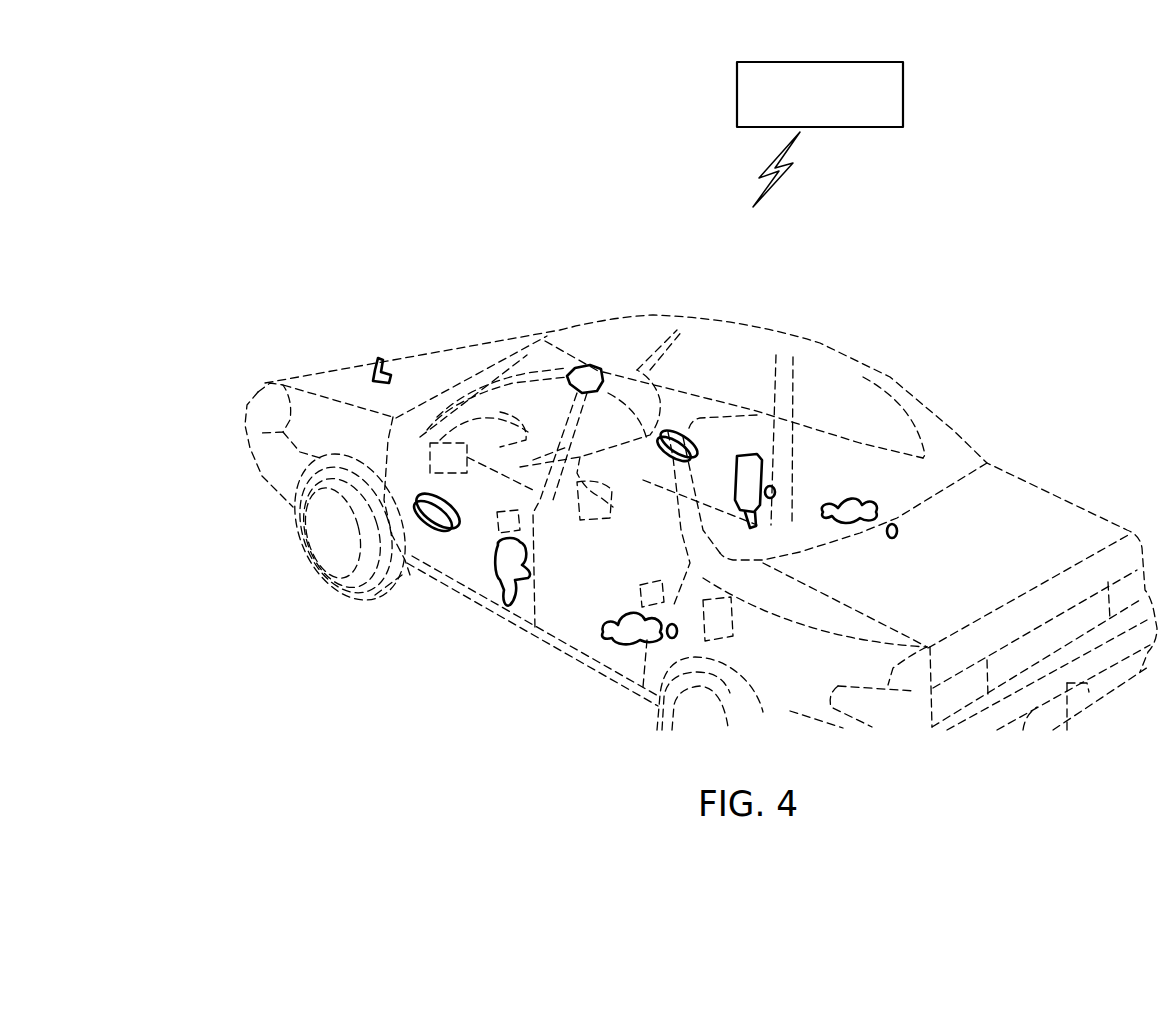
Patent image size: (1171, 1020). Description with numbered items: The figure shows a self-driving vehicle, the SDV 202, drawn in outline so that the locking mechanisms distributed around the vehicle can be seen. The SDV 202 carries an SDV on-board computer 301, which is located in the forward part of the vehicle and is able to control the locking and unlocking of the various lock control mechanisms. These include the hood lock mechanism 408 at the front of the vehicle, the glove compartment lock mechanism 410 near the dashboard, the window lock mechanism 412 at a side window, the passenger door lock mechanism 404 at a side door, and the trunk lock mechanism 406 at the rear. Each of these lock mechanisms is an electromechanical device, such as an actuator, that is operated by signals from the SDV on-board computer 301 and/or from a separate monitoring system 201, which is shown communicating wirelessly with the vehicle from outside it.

The SDV 202 is at (349, 188).
The monitoring system 201 is at (801, 117).
The hood lock mechanism 408 is at (376, 357).
The glove compartment lock mechanism 410 is at (587, 365).
The passenger door lock mechanism 404 is at (753, 452).
The trunk lock mechanism 406 is at (893, 522).
The SDV on-board computer 301 is at (437, 528).
The window lock mechanism 412 is at (507, 607).